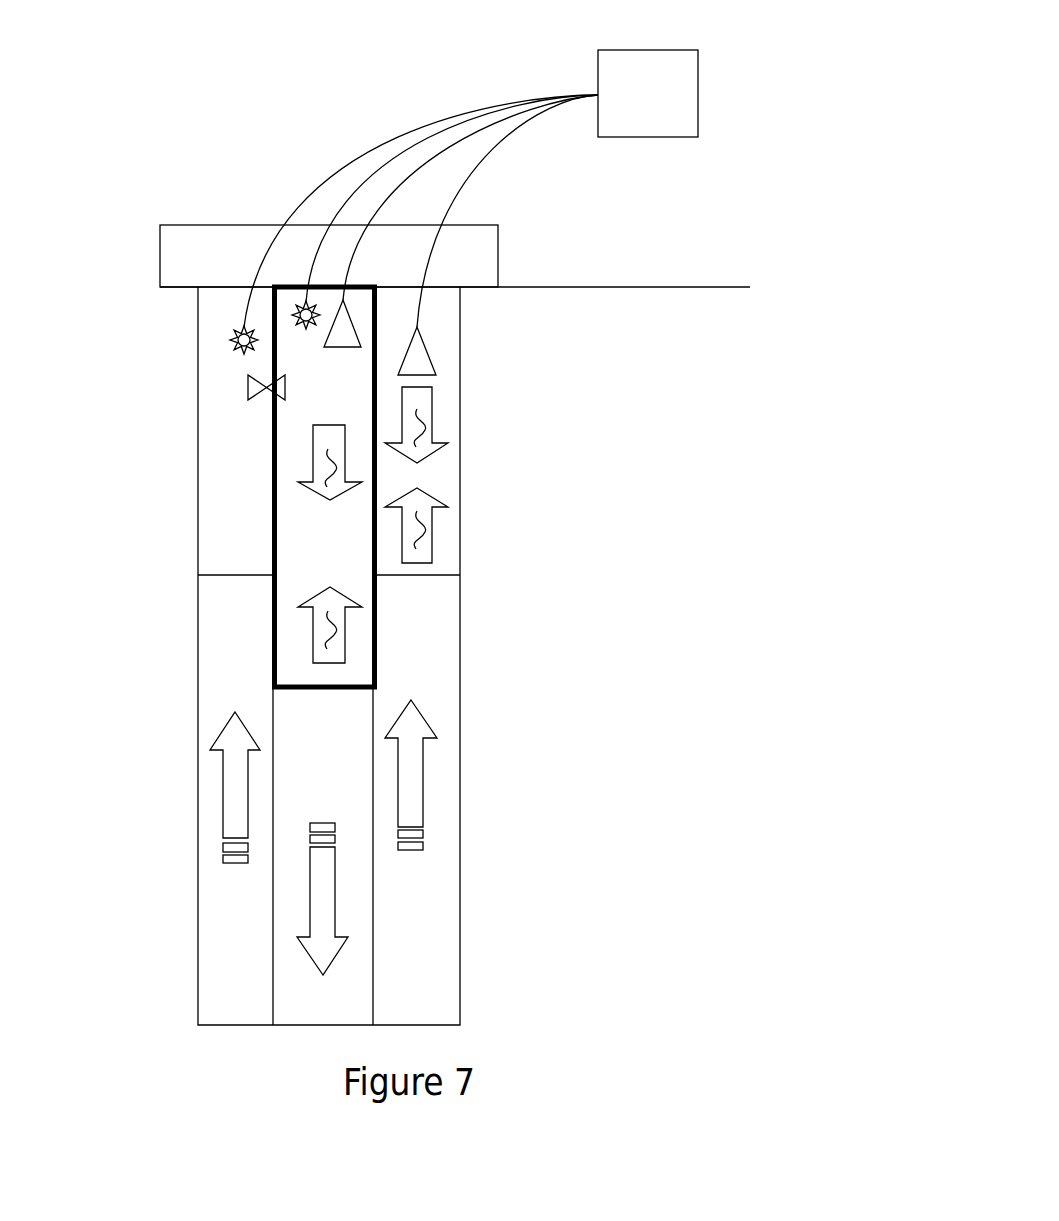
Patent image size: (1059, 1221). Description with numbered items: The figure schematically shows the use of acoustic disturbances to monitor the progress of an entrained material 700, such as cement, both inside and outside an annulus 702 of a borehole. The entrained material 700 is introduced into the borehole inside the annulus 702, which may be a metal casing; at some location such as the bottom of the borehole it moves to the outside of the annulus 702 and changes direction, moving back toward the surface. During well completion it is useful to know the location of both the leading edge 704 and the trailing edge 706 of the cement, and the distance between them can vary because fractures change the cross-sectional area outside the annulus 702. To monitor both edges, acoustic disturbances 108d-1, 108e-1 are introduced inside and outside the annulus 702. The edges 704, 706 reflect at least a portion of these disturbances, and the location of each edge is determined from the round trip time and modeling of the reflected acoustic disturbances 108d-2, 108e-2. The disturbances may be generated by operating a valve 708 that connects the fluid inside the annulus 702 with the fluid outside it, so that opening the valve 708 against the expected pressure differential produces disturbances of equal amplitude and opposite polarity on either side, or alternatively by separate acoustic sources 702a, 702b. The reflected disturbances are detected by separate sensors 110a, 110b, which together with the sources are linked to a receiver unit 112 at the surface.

The entrained material 700 is at (435, 912).
The annulus 702 is at (270, 460).
The acoustic source 702a is at (299, 306).
The acoustic source 702b is at (232, 335).
The leading edge 704 is at (435, 575).
The trailing edge 706 is at (310, 687).
The valve 708 is at (250, 388).
The sensor 110a is at (338, 339).
The sensor 110b is at (425, 350).
The acoustic disturbance 108d-1 is at (310, 438).
The reflected acoustic disturbance 108d-2 is at (345, 627).
The acoustic disturbance 108e-1 is at (435, 410).
The reflected acoustic disturbance 108e-2 is at (435, 538).
The receiver unit 112 is at (488, 169).